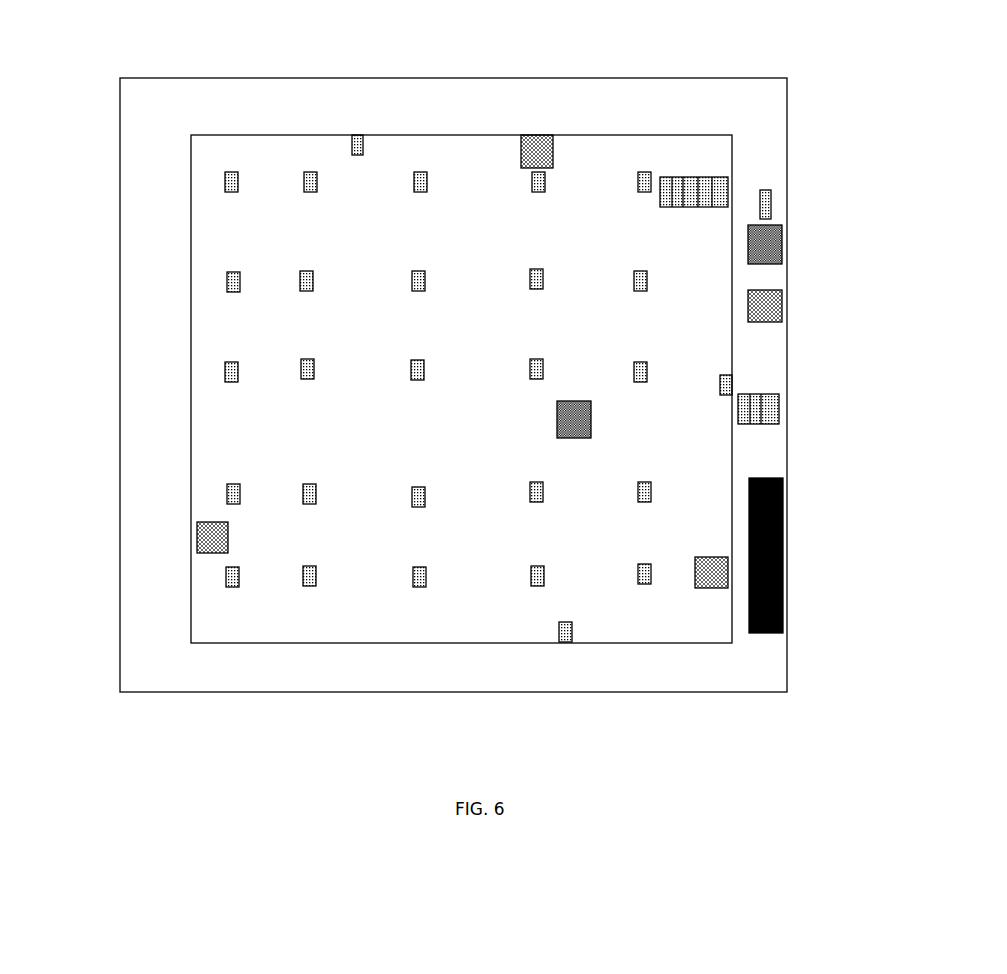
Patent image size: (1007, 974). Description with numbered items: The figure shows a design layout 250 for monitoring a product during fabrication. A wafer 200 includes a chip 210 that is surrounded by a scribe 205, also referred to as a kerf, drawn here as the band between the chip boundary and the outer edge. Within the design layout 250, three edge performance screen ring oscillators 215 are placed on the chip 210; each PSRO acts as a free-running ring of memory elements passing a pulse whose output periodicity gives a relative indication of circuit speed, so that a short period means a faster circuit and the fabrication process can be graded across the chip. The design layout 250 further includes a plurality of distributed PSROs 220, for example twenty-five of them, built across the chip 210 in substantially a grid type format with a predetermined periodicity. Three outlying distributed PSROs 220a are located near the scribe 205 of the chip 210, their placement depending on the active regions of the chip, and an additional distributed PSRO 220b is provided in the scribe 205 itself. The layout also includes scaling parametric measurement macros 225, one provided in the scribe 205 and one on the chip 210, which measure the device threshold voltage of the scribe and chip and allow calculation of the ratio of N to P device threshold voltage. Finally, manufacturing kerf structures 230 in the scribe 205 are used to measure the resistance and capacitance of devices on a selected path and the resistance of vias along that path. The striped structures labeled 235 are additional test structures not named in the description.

The wafer 200 is at (118, 385).
The scribe 205 is at (705, 115).
The chip 210 is at (713, 165).
The edge performance screen ring oscillators 215 is at (537, 136).
The distributed PSROs 220 is at (309, 171).
The outlying distributed PSROs 220a is at (357, 135).
The distributed PSRO in the scribe 220b is at (771, 203).
The scaling parametric measurement macros 225 is at (575, 438).
The manufacturing kerf structures 230 is at (783, 555).
The striped sensor element 235 is at (695, 207).
The design layout 250 is at (262, 57).